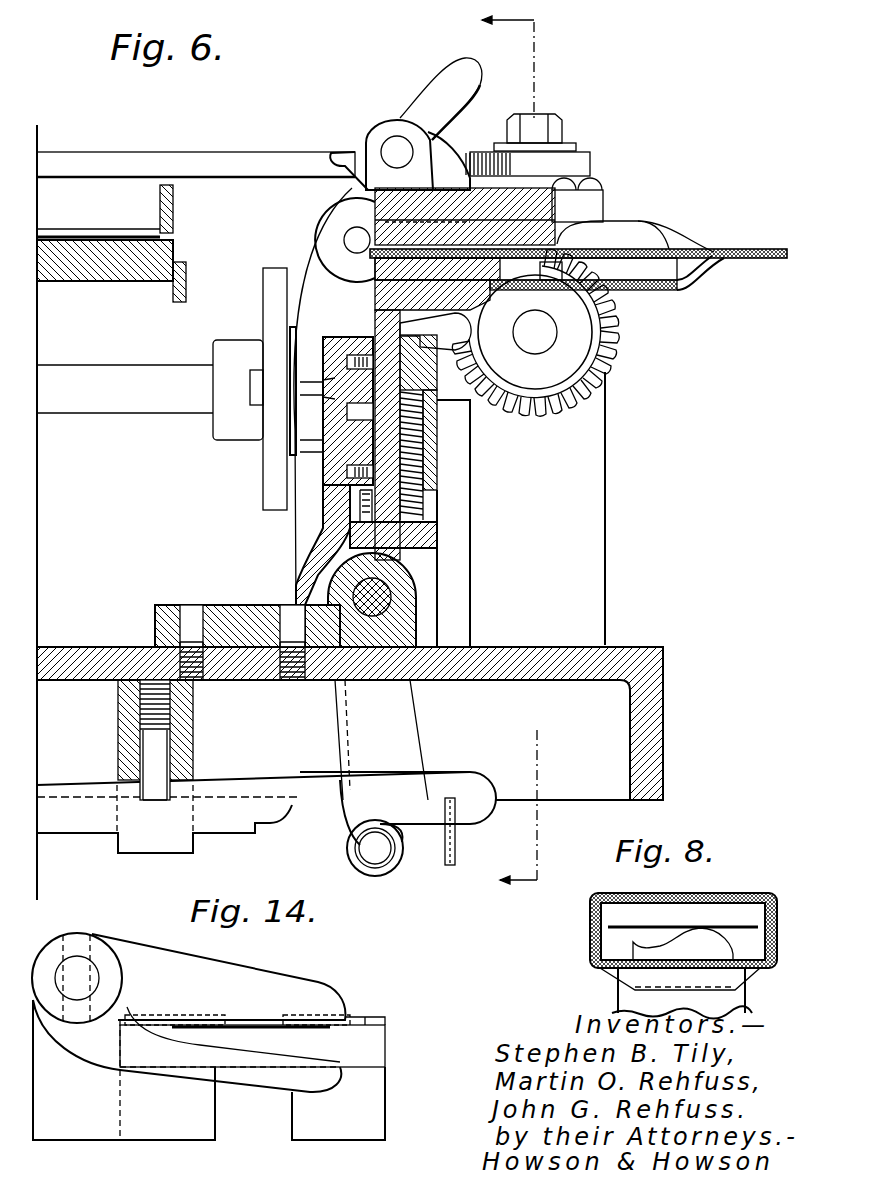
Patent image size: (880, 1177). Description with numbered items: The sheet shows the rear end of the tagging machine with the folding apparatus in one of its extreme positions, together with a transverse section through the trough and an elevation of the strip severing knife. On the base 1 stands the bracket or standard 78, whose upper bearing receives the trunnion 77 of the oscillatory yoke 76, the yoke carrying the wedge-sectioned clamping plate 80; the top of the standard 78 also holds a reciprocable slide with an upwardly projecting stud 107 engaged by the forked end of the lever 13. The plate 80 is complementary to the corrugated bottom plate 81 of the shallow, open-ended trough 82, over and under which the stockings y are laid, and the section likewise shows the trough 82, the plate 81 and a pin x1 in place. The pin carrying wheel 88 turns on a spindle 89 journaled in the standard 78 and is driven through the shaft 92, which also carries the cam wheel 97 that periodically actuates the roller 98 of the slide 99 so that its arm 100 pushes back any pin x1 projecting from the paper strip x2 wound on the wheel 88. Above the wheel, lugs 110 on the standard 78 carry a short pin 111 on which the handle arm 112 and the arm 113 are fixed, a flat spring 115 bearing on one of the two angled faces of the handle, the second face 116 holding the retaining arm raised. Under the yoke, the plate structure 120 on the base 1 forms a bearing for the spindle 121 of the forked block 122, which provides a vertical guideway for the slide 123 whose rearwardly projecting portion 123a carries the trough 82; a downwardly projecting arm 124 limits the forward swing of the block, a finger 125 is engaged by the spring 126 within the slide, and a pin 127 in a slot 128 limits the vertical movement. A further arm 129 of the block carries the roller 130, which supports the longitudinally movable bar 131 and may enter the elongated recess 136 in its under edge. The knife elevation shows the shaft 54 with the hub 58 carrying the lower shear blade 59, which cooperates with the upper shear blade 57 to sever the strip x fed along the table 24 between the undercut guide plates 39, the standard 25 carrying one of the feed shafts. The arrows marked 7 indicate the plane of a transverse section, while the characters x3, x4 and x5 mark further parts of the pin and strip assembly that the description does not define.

In FIG. 6, the base 1 is at (660, 680).
In FIG. 6, the section line 7 is at (511, 451).
In FIG. 6, the lever 13 is at (195, 152).
In FIG. 6, the table 24 is at (130, 281).
In FIG. 14, the table 24 is at (370, 1045).
In FIG. 14, the standard 25 is at (209, 1070).
In FIG. 6, the undercut guide plates 39 is at (92, 229).
In FIG. 14, the undercut guide plates 39 is at (190, 1017).
In FIG. 14, the shaft 54 is at (80, 975).
In FIG. 6, the knife or shear blade 57 is at (175, 205).
In FIG. 14, the knife or shear blade 57 is at (255, 975).
In FIG. 14, the second hub 58 is at (60, 937).
In FIG. 6, the second shear blade 59 is at (190, 269).
In FIG. 14, the second shear blade 59 is at (172, 1052).
In FIG. 6, the oscillatory yoke 76 is at (553, 193).
In FIG. 6, the trunnion 77 is at (355, 238).
In FIG. 6, the bracket or standard 78 is at (618, 426).
In FIG. 6, the plate 80 is at (558, 218).
In FIG. 6, the second plate 81 is at (562, 272).
In FIG. 8, the second plate 81 is at (683, 944).
In FIG. 6, the trough 82 is at (680, 288).
In FIG. 8, the trough 82 is at (600, 950).
In FIG. 6, the pin carrying wheel 88 is at (575, 350).
In FIG. 6, the spindle 89 is at (535, 342).
In FIG. 6, the shaft 92 is at (113, 408).
In FIG. 6, the cam wheel 97 is at (280, 268).
In FIG. 6, the roller 98 is at (275, 403).
In FIG. 6, the slide 99 is at (290, 440).
In FIG. 6, the arm 100 is at (435, 331).
In FIG. 6, the stud 107 is at (540, 118).
In FIG. 6, the lugs 110 is at (402, 122).
In FIG. 6, the spindle or pin 111 is at (393, 142).
In FIG. 6, the arm 112 is at (470, 65).
In FIG. 6, the arm 113 is at (447, 168).
In FIG. 6, the flat spring 115 is at (480, 155).
In FIG. 6, the second flat face 116 is at (352, 150).
In FIG. 6, the plate structure 120 is at (243, 605).
In FIG. 6, the spindle 121 is at (390, 594).
In FIG. 6, the forked block 122 is at (358, 337).
In FIG. 6, the slide 123 is at (438, 435).
In FIG. 8, the slide 123 is at (682, 993).
In FIG. 6, the projecting portion 123a is at (500, 347).
In FIG. 6, the arm 124 is at (330, 535).
In FIG. 6, the finger 125 is at (435, 535).
In FIG. 6, the spring 126 is at (425, 500).
In FIG. 6, the pin 127 is at (345, 452).
In FIG. 6, the slot 128 is at (345, 413).
In FIG. 6, the arm 129 is at (352, 712).
In FIG. 6, the roller 130 is at (377, 876).
In FIG. 6, the bar 131 is at (487, 780).
In FIG. 6, the elongated recess 136 is at (292, 812).
In FIG. 6, the strip x is at (68, 236).
In FIG. 14, the strip x is at (250, 1025).
In FIG. 6, the pin x1 is at (456, 855).
In FIG. 8, the pin x1 is at (683, 916).
In FIG. 6, the paper strip x2 is at (450, 866).
In FIG. 6, the part x3 is at (496, 383).
In FIG. 6, the cam curve x4 is at (585, 240).
In FIG. 6, the part x5 is at (623, 269).
In FIG. 6, the pair of stockings y is at (712, 250).
In FIG. 8, the pair of stockings y is at (725, 893).